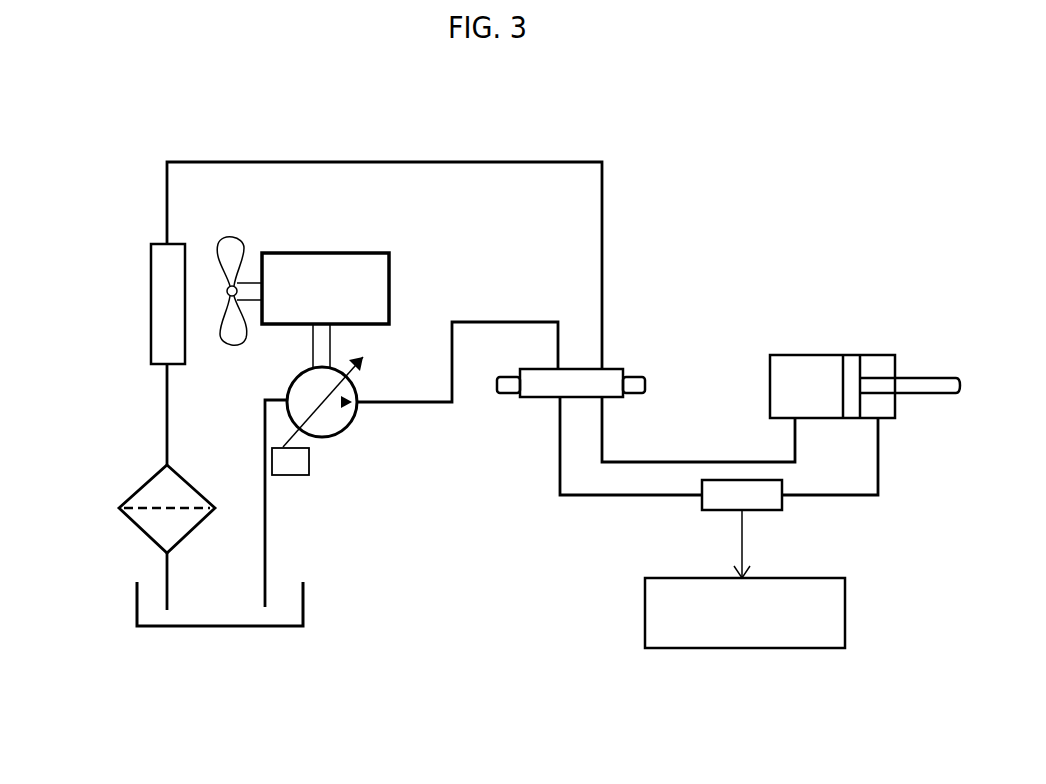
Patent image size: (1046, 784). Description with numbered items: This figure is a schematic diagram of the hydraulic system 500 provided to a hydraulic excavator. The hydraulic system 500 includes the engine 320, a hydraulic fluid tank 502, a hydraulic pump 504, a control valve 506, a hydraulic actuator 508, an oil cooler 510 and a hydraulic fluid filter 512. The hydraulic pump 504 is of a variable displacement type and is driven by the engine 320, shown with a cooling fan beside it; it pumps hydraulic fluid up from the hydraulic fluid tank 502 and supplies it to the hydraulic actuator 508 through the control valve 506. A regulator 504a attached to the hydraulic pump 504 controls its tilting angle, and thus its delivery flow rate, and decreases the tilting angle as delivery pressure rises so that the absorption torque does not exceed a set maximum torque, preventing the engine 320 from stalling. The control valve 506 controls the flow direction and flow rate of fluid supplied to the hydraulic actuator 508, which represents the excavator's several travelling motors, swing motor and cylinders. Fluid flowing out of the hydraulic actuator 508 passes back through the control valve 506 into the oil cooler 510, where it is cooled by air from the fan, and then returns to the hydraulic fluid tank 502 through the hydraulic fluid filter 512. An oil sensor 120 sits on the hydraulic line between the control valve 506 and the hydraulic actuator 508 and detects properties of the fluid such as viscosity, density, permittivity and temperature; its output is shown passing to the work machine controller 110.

The work machine controller 110 is at (745, 648).
The oil sensor 120 is at (747, 529).
The engine 320 is at (303, 301).
The hydraulic system 500 is at (603, 550).
The hydraulic fluid tank 502 is at (303, 600).
The hydraulic pump 504 is at (287, 390).
The regulator 504a is at (291, 475).
The control valve 506 is at (608, 369).
The hydraulic actuator 508 is at (798, 355).
The oil cooler 510 is at (150, 322).
The hydraulic fluid filter 512 is at (145, 478).